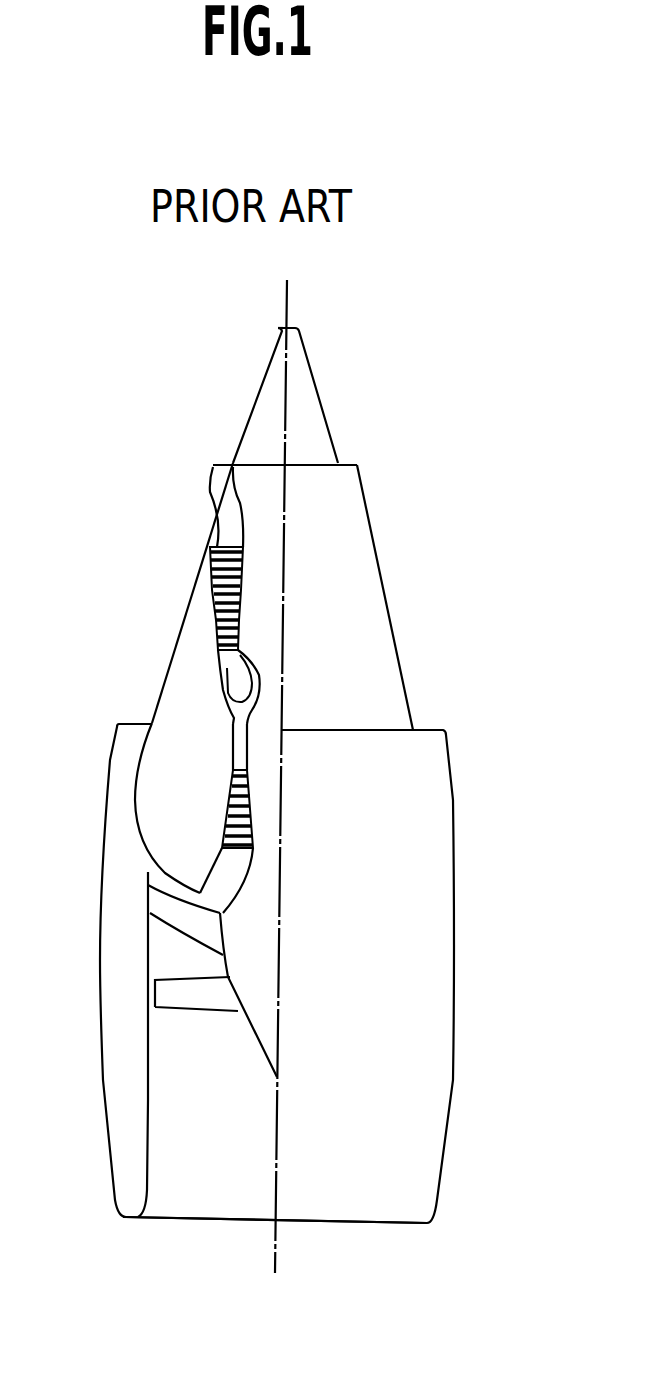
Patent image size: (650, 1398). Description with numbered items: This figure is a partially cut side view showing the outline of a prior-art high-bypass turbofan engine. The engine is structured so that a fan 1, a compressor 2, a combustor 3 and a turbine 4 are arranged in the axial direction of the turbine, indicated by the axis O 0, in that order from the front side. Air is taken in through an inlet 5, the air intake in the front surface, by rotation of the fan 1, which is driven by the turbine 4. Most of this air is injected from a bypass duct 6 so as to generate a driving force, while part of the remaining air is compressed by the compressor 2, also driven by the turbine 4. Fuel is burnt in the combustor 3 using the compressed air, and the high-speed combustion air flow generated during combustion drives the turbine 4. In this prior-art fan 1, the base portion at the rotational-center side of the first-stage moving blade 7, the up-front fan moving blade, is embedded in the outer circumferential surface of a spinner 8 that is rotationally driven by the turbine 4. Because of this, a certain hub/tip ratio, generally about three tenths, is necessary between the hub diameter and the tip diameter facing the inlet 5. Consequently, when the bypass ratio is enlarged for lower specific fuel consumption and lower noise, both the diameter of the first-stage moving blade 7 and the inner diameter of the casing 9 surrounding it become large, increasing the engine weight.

The axis 0 is at (276, 796).
The fan 1 is at (190, 1021).
The compressor 2 is at (227, 812).
The combustor 3 is at (215, 683).
The turbine 4 is at (210, 580).
The inlet (air intake) 5 is at (207, 1178).
The bypass duct 6 is at (126, 737).
The first-stage moving blade 7 is at (177, 992).
The spinner 8 is at (265, 1009).
The casing 9 is at (113, 1014).